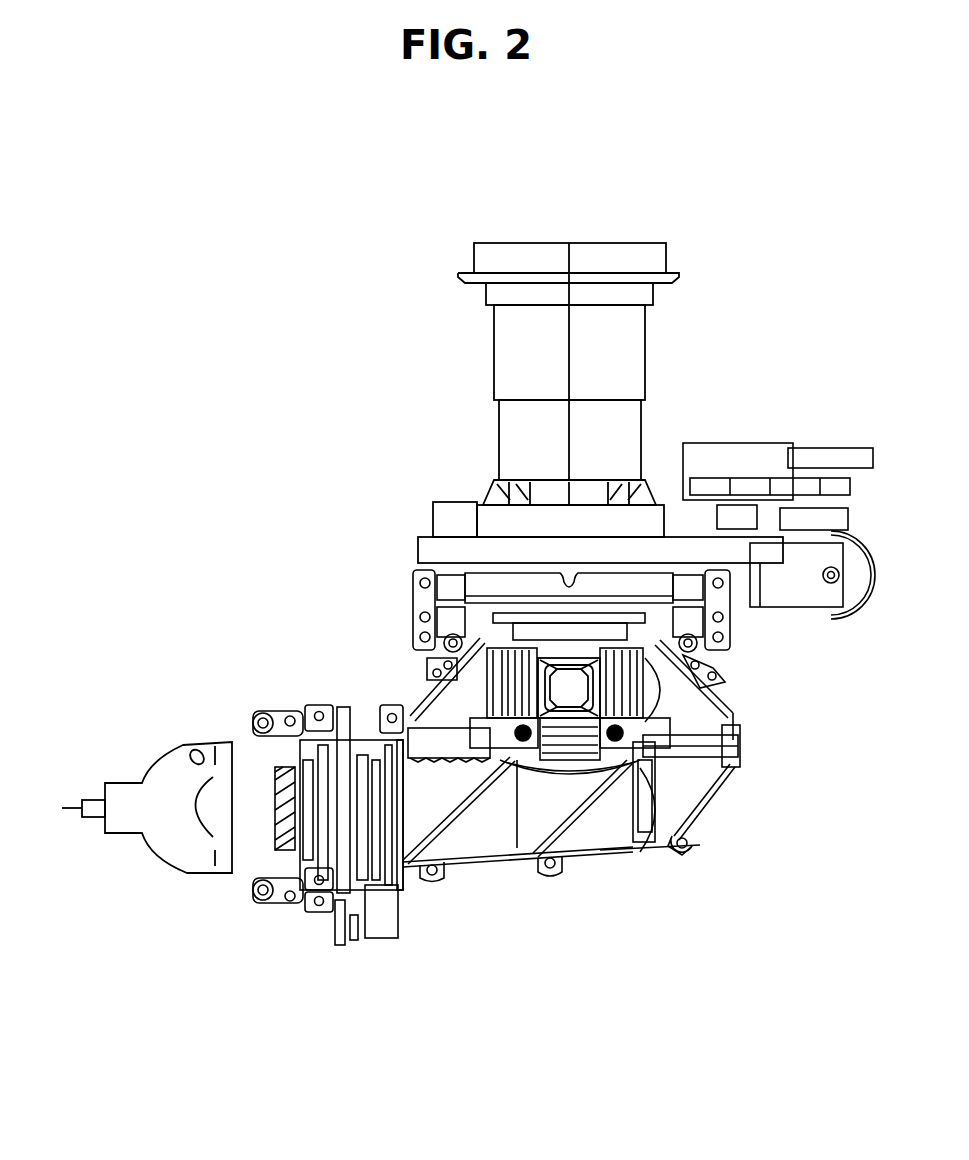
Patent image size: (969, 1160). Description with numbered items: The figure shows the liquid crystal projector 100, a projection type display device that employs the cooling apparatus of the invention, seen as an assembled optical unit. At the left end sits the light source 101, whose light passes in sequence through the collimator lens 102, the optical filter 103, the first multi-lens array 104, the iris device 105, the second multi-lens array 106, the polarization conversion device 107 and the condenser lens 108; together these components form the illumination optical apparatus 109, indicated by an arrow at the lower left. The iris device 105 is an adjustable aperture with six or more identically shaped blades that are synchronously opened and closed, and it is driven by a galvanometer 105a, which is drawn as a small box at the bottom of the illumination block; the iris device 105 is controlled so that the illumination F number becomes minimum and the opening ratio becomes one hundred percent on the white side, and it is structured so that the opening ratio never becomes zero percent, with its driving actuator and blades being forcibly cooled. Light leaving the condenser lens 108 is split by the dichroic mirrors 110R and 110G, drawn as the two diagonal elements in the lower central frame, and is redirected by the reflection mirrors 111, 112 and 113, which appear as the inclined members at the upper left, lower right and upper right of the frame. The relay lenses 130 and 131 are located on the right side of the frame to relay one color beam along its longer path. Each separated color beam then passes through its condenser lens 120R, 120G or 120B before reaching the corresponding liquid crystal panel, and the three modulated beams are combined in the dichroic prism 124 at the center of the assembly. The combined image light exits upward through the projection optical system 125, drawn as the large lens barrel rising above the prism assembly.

The liquid crystal projector 100 is at (352, 331).
The light source 101 is at (183, 748).
The collimator lens 102 is at (275, 830).
The optical filter 103 is at (292, 897).
The first multi-lens array 104 is at (317, 902).
The iris device 105 is at (327, 910).
The galvanometer 105a is at (400, 930).
The second multi-lens array 106 is at (350, 735).
The polarization conversion device 107 is at (373, 890).
The condenser lens 108 is at (405, 865).
The illumination optical apparatus 109 is at (215, 948).
The dichroic mirror 110R is at (467, 805).
The dichroic mirror 110G is at (585, 805).
The reflection mirror 111 is at (430, 697).
The reflection mirror 112 is at (715, 808).
The reflection mirror 113 is at (718, 684).
The condenser lens 120R is at (487, 698).
The condenser lens 120G is at (535, 770).
The condenser lens 120B is at (655, 698).
The dichroic prism 124 is at (569, 683).
The projection optical system 125 is at (645, 350).
The relay lens 130 is at (653, 832).
The relay lens 131 is at (697, 740).